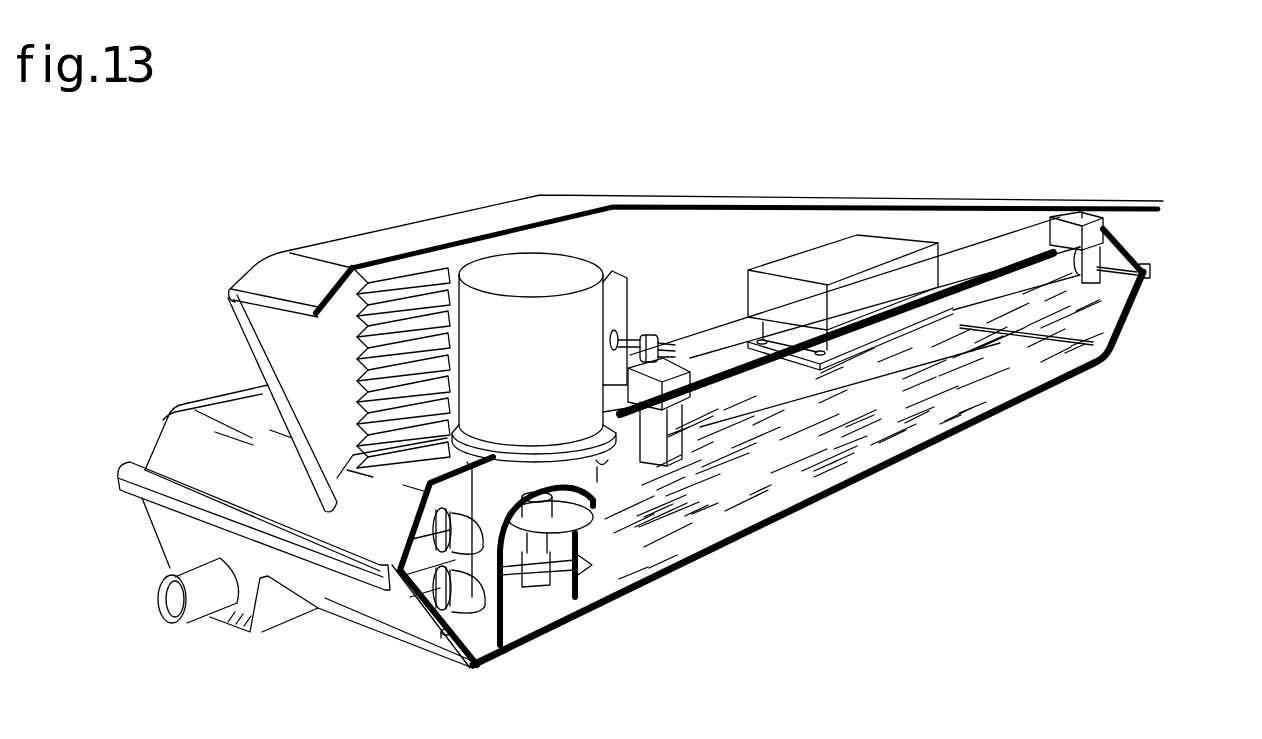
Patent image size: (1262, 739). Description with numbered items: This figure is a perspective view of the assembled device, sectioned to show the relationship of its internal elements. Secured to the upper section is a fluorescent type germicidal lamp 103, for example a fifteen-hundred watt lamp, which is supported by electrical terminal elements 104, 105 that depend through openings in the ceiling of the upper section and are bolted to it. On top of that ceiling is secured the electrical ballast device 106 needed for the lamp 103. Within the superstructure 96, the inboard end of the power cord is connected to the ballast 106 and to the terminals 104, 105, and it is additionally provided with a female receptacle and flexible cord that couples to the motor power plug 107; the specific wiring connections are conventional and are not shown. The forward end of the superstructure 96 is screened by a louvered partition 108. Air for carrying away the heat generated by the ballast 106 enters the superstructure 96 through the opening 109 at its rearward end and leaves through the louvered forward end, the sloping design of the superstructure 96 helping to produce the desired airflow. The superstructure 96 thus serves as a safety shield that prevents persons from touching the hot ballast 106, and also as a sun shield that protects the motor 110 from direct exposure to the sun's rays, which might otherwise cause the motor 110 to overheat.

The superstructure 96 is at (437, 230).
The fluorescent type germicidal lamp 103 is at (732, 417).
The electrical terminal element 104 is at (658, 443).
The electrical terminal element 105 is at (1093, 260).
The electrical ballast device 106 is at (846, 302).
The motor power plug 107 is at (642, 333).
The louvered partition 108 is at (377, 372).
The opening 109 is at (1120, 219).
The motor 110 is at (545, 364).